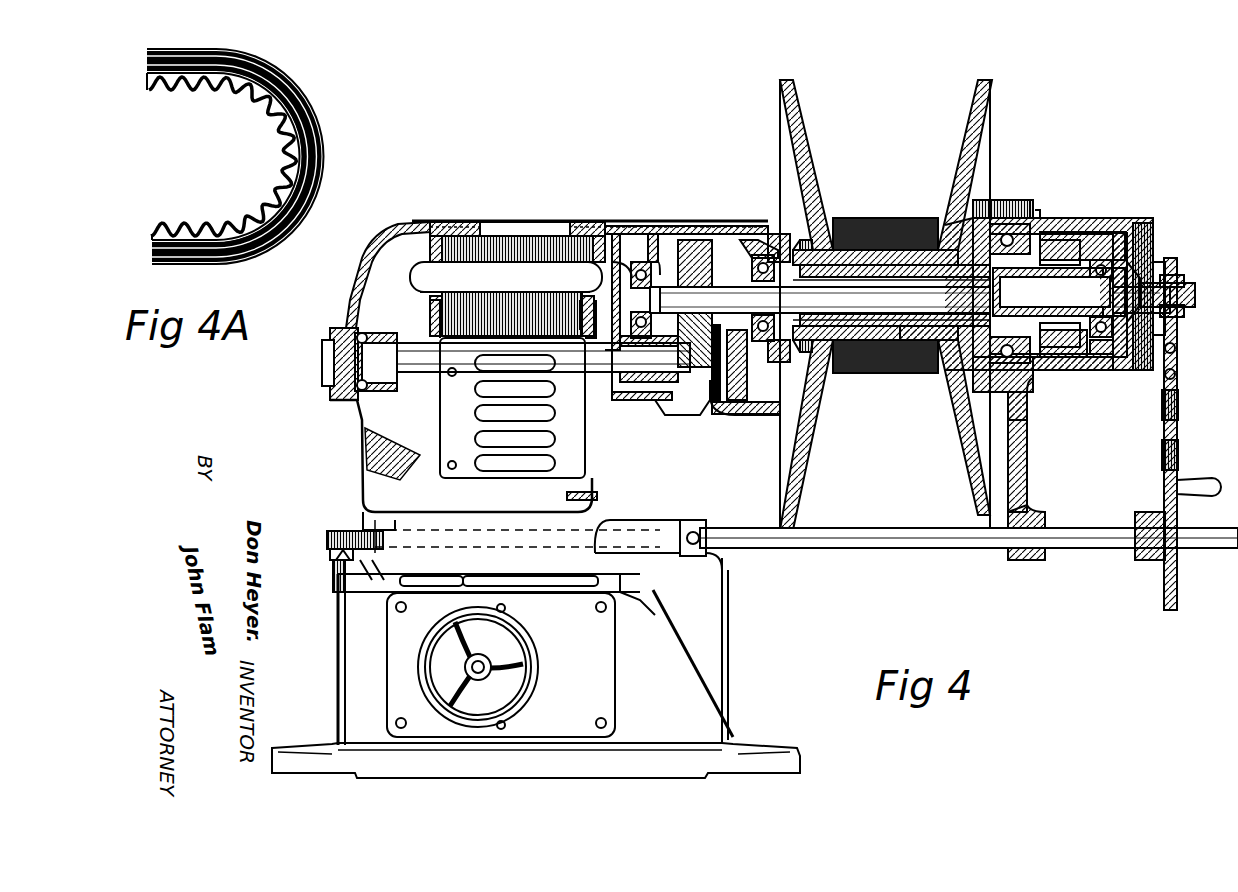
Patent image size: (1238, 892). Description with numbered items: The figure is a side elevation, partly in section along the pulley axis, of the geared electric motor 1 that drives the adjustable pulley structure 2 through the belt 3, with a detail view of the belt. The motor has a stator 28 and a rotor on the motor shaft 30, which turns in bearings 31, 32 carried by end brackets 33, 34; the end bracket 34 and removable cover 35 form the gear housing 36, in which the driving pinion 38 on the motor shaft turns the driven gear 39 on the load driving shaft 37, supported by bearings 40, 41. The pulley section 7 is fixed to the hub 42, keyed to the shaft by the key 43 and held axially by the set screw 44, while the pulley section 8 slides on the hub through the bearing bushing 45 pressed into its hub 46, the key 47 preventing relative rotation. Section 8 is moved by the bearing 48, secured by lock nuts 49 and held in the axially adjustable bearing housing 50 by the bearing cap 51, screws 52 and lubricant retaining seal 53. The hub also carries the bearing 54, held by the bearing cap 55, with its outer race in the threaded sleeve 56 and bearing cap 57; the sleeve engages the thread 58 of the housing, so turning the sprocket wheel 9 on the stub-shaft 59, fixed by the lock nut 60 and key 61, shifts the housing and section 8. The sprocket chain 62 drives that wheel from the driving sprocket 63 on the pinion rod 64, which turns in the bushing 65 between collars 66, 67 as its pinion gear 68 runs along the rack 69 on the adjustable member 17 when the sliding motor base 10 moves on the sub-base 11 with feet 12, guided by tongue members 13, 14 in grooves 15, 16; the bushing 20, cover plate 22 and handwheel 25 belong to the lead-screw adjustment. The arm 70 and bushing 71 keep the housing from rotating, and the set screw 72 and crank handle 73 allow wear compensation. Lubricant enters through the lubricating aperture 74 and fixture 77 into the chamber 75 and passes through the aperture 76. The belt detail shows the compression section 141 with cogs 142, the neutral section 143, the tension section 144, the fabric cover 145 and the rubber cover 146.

In FIG. 4, the geared electric motor 1 is at (362, 482).
In FIG. 4, the adjustable pulley structure 2 is at (888, 120).
In FIG. 4, the belt 3 is at (885, 218).
In FIG. 4, the pulley section 7 is at (800, 98).
In FIG. 4, the pulley section 8 is at (972, 92).
In FIG. 4, the sprocket wheel 9 is at (1175, 330).
In FIG. 4, the sliding motor base 10 is at (670, 505).
In FIG. 4, the sub-base 11 is at (336, 636).
In FIG. 4, the feet 12 is at (800, 762).
In FIG. 4, the tongue member 13 is at (385, 572).
In FIG. 4, the tongue member 14 is at (590, 576).
In FIG. 4, the groove 15 is at (390, 592).
In FIG. 4, the groove 16 is at (615, 600).
In FIG. 4, the adjustable member 17 is at (332, 568).
In FIG. 4, the bushing 20 is at (545, 320).
In FIG. 4, the removable cover plate 22 is at (618, 660).
In FIG. 4, the handwheel 25 is at (538, 658).
In FIG. 4, the stator 28 is at (438, 225).
In FIG. 4, the motor shaft 30 is at (595, 330).
In FIG. 4, the bearing 31 is at (340, 318).
In FIG. 4, the bearing 32 is at (680, 395).
In FIG. 4, the end bracket 33 is at (378, 245).
In FIG. 4, the end bracket 34 is at (680, 430).
In FIG. 4, the removable cover 35 is at (735, 418).
In FIG. 4, the gear housing 36 is at (745, 385).
In FIG. 4, the load driving shaft 37 is at (745, 250).
In FIG. 4, the driving pinion 38 is at (690, 367).
In FIG. 4, the driven gear 39 is at (680, 240).
In FIG. 4, the bearing 40 is at (625, 225).
In FIG. 4, the bearing 41 is at (775, 240).
In FIG. 4, the hub 42 is at (845, 313).
In FIG. 4, the key 43 is at (727, 299).
In FIG. 4, the set screw 44 is at (810, 352).
In FIG. 4, the bearing bushing 45 is at (905, 328).
In FIG. 4, the hub 46 is at (960, 232).
In FIG. 4, the key 47 is at (875, 293).
In FIG. 4, the bearing 48 is at (1025, 372).
In FIG. 4, the lock nuts 49 is at (1035, 230).
In FIG. 4, the bearing housing 50 is at (1010, 200).
In FIG. 4, the bearing cap 51 is at (990, 388).
In FIG. 4, the screws 52 is at (1036, 200).
In FIG. 4, the lubricant retaining seal 53 is at (935, 345).
In FIG. 4, the bearing 54 is at (1115, 220).
In FIG. 4, the bearing cap 55 is at (1090, 270).
In FIG. 4, the threaded sleeve 56 is at (1075, 370).
In FIG. 4, the bearing cap 57 is at (1120, 356).
In FIG. 4, the thread 58 is at (1143, 370).
In FIG. 4, the stub-shaft 59 is at (1192, 298).
In FIG. 4, the lock nut 60 is at (1182, 318).
In FIG. 4, the key 61 is at (1182, 278).
In FIG. 4, the sprocket chain 62 is at (1180, 410).
In FIG. 4, the driving sprocket 63 is at (1178, 595).
In FIG. 4, the pinion rod 64 is at (1063, 548).
In FIG. 4, the bushing 65 is at (665, 565).
In FIG. 4, the collar 66 is at (362, 512).
In FIG. 4, the collar 67 is at (705, 520).
In FIG. 4, the pinion gear 68 is at (330, 535).
In FIG. 4, the rack 69 is at (330, 552).
In FIG. 4, the arm 70 is at (1030, 455).
In FIG. 4, the bushing 71 is at (1045, 500).
In FIG. 4, the set screw 72 is at (1148, 512).
In FIG. 4, the crank handle 73 is at (1208, 478).
In FIG. 4, the lubricating aperture 74 is at (1150, 238).
In FIG. 4, the lubricant retaining chamber 75 is at (1086, 303).
In FIG. 4, the lubricant conducting aperture 76 is at (1051, 292).
In FIG. 4, the pressure lubricating fixture 77 is at (1148, 258).
In FIG. 4A, the compression section 141 is at (283, 141).
In FIG. 4A, the cogs 142 is at (175, 92).
In FIG. 4A, the neutral section 143 is at (300, 78).
In FIG. 4A, the tension section 144 is at (310, 115).
In FIG. 4A, the fabric cover 145 is at (275, 192).
In FIG. 4A, the rubber cover 146 is at (322, 144).